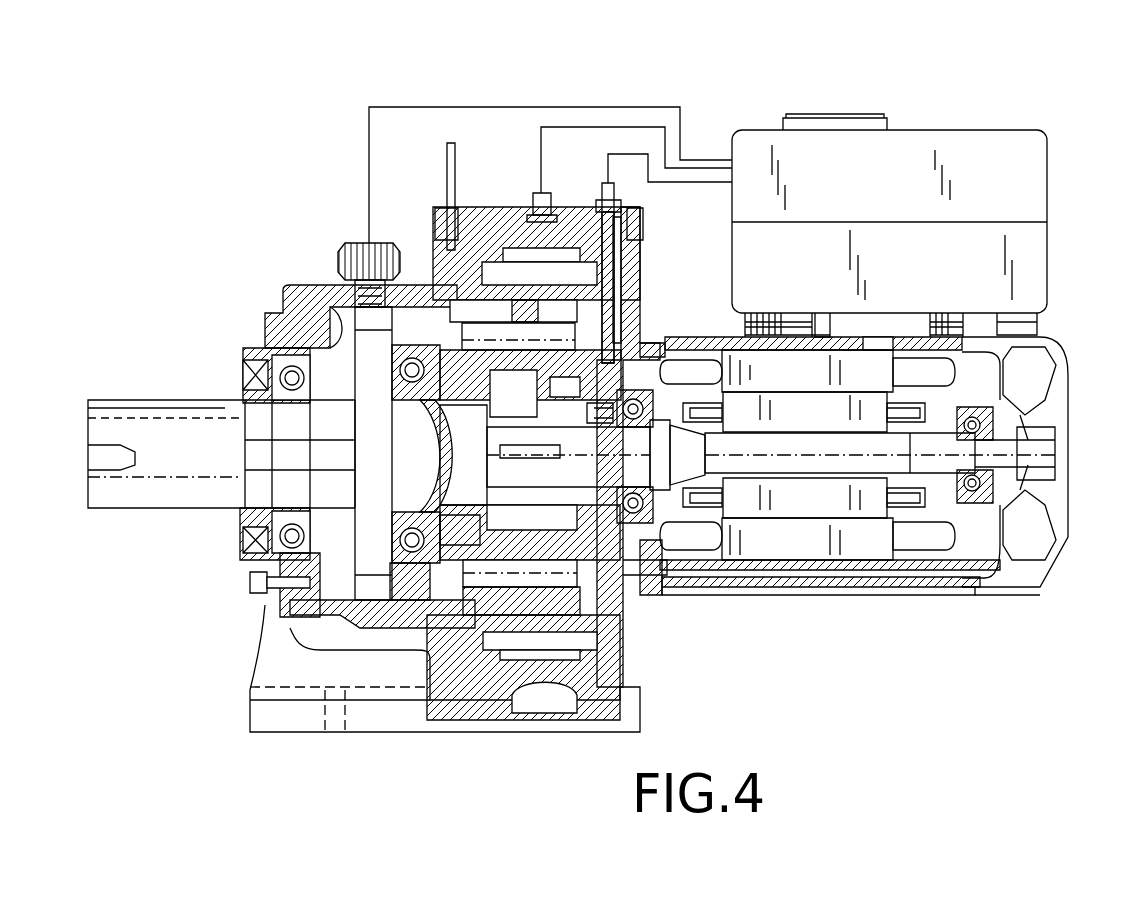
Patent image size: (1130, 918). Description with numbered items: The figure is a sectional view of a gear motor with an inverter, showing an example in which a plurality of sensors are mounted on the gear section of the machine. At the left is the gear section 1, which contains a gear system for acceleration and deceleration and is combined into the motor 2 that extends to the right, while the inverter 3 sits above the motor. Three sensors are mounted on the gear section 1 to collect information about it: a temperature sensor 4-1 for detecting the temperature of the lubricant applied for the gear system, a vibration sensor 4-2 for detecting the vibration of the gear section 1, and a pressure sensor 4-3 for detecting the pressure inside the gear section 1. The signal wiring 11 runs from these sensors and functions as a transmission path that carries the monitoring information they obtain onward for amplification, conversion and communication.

The gear section 1 is at (293, 290).
The motor 2 is at (850, 597).
The inverter 3 is at (930, 128).
The temperature sensor 4-1 is at (437, 527).
The vibration sensor 4-2 is at (533, 192).
The pressure sensor 4-3 is at (602, 190).
The signal wiring 11 is at (642, 106).